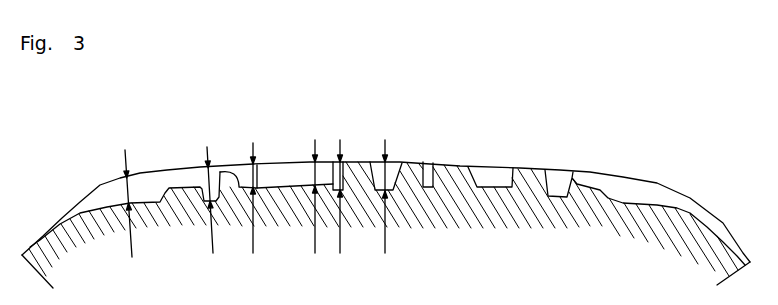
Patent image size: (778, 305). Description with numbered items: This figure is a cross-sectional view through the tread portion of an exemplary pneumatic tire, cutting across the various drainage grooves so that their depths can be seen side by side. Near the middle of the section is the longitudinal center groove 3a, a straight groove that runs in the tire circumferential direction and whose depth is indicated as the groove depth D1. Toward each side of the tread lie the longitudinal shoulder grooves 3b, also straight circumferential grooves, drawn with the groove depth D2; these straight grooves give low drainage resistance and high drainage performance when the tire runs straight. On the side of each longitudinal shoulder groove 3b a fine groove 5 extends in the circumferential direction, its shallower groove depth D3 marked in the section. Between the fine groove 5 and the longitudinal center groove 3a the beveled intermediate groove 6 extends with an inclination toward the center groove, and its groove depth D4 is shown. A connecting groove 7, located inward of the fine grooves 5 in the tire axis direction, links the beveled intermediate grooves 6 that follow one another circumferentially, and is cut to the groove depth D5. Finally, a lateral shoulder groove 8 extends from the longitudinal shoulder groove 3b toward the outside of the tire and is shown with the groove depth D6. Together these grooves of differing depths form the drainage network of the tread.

The lateral shoulder groove 8 is at (100, 185).
The longitudinal center groove 3a is at (396, 160).
The longitudinal shoulder groove 3b is at (197, 167).
The fine groove 5 is at (241, 166).
The beveled intermediate groove 6 is at (292, 160).
The connecting groove 7 is at (353, 162).
The groove depth of the longitudinal center groove D1 is at (395, 211).
The groove depth of the longitudinal shoulder groove D2 is at (212, 215).
The groove depth of the fine groove D3 is at (257, 213).
The groove depth of the beveled intermediate groove D4 is at (305, 211).
The groove depth of the connecting groove D5 is at (350, 211).
The groove depth of the lateral shoulder groove D6 is at (130, 218).